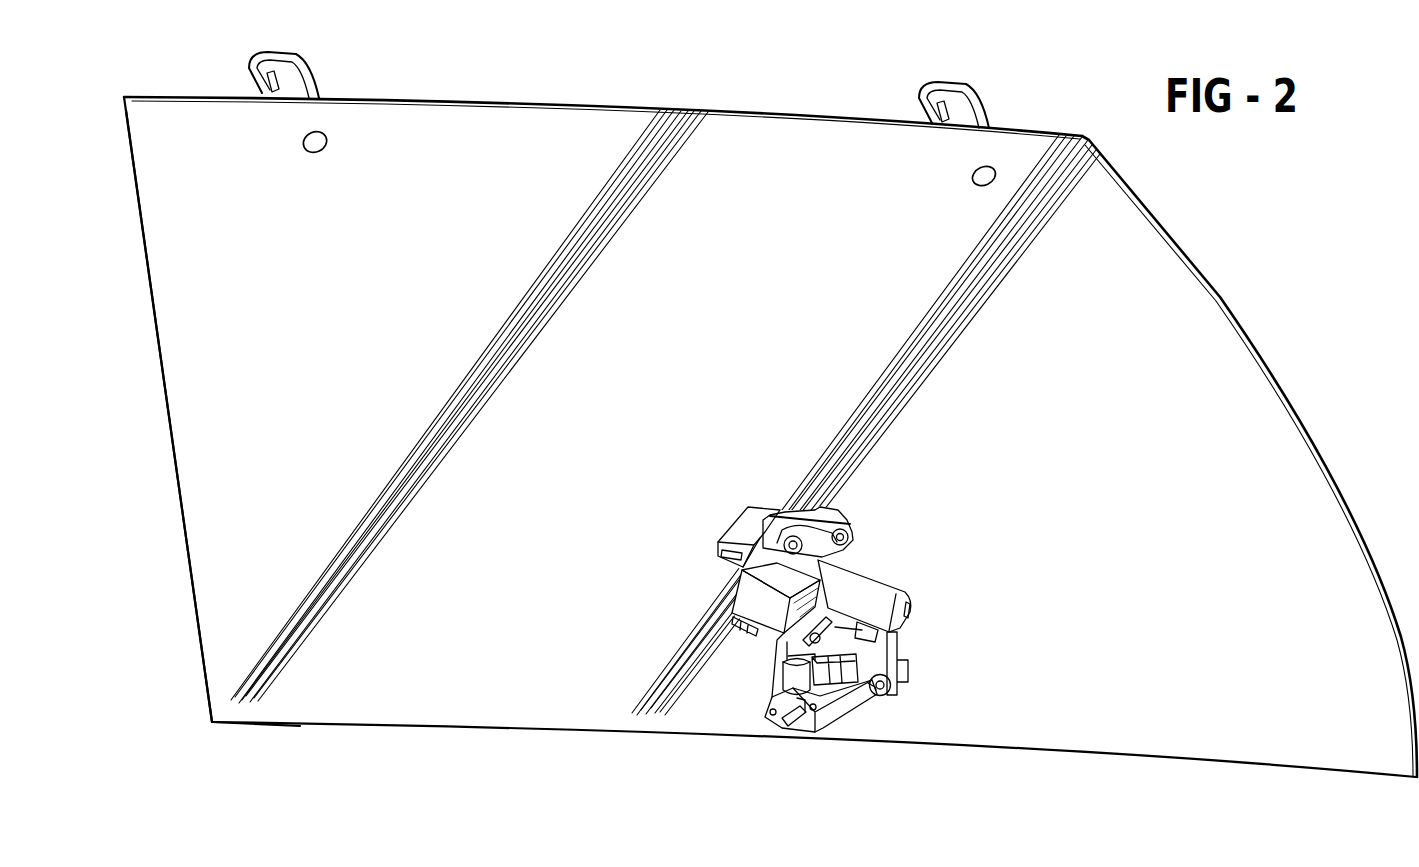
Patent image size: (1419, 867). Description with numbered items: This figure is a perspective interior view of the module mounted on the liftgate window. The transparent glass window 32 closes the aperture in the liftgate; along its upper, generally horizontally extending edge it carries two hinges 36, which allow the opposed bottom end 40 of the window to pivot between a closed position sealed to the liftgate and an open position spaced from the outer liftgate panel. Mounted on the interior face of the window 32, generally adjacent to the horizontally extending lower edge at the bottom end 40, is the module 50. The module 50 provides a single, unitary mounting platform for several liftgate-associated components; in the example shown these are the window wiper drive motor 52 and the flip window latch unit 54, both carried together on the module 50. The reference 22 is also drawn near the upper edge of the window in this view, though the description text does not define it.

The window glass panel 22 is at (652, 106).
The glass window 32 is at (1120, 338).
The hinges 36 is at (303, 88).
The bottom end 40 is at (212, 712).
The module 50 is at (836, 725).
The wiper drive motor 52 is at (866, 587).
The flip window latch unit 54 is at (774, 687).